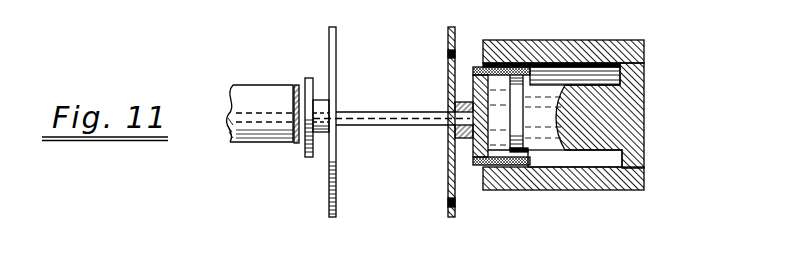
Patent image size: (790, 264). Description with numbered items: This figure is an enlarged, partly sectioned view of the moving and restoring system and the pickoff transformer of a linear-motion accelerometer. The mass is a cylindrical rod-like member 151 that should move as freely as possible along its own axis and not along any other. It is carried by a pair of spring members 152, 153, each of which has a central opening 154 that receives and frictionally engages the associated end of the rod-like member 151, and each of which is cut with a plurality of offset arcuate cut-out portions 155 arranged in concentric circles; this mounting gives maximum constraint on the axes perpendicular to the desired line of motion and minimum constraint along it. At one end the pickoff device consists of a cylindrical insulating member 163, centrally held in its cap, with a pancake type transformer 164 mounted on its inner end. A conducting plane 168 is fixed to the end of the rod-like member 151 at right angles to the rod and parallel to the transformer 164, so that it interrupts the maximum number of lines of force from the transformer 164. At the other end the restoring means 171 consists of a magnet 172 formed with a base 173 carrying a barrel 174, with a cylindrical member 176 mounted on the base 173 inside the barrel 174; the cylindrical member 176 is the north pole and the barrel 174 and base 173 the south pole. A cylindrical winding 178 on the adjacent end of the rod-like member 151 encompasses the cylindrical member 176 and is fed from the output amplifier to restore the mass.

The cylindrical rod-like member 151 is at (401, 125).
The spring member 152 is at (337, 70).
The spring member 153 is at (448, 72).
The central opening 154 is at (455, 110).
The offset arcuate cut-out portions 155 is at (448, 53).
The cylindrical insulating member 163 is at (244, 95).
The pancake type transformer 164 is at (297, 85).
The conducting plane 168 is at (310, 78).
The restoring means 171 is at (477, 202).
The magnet 172 is at (643, 177).
The base 173 is at (640, 70).
The barrel 174 is at (590, 50).
The cylindrical member 176 is at (556, 119).
The cylindrical winding 178 is at (505, 67).